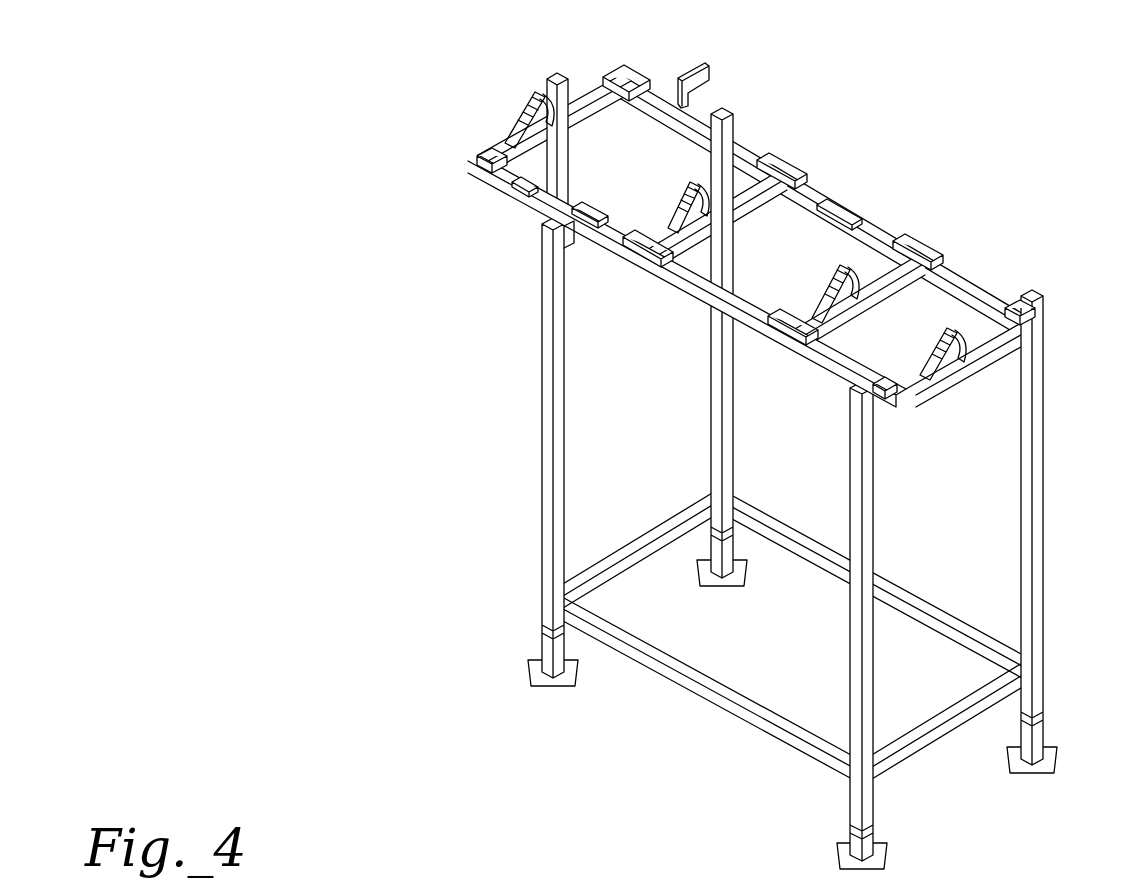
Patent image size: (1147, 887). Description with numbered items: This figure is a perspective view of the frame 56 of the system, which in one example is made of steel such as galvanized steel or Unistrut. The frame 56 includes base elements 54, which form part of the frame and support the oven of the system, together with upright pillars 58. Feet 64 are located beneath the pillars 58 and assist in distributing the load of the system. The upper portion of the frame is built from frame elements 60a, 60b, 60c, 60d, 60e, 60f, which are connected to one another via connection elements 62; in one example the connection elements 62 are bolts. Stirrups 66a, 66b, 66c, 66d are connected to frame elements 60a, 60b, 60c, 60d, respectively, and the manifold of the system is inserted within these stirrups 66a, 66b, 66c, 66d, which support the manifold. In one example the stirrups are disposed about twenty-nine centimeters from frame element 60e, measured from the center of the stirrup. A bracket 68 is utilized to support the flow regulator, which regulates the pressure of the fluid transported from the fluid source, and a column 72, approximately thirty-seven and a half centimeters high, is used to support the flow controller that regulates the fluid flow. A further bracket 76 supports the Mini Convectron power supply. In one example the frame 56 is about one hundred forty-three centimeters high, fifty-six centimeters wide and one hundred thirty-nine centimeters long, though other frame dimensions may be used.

The base elements 54 is at (628, 540).
The frame 56 is at (888, 81).
The pillars 58 is at (545, 362).
The frame element 60a is at (565, 95).
The frame element 60b is at (748, 183).
The frame element 60c is at (880, 248).
The frame element 60d is at (990, 325).
The frame element 60e is at (643, 268).
The frame element 60f is at (822, 180).
The connection elements 62 is at (615, 63).
The feet 64 is at (747, 575).
The stirrup 66a is at (512, 118).
The stirrup 66b is at (676, 200).
The stirrup 66c is at (817, 285).
The stirrup 66d is at (930, 345).
The bracket 68 is at (700, 62).
The column 72 is at (568, 153).
The bracket 76 is at (850, 203).